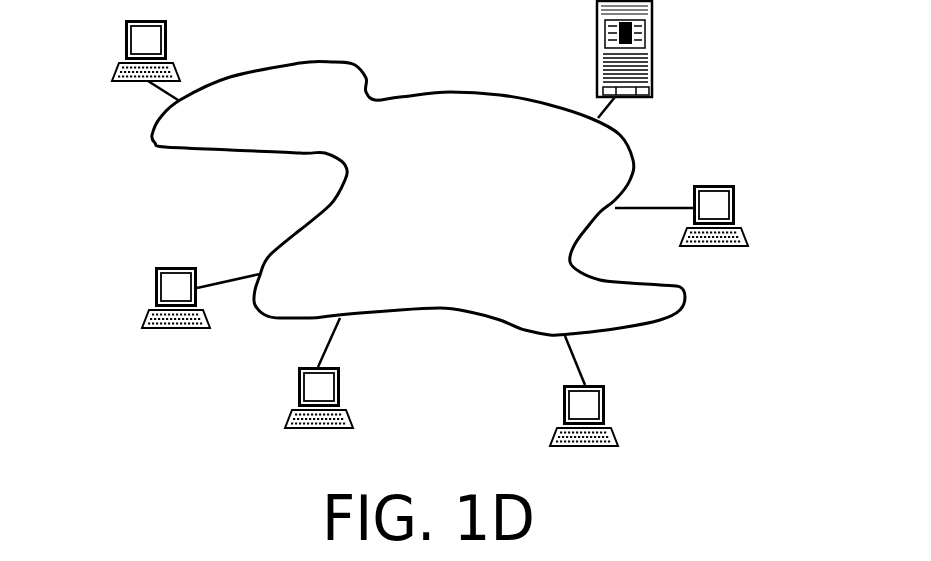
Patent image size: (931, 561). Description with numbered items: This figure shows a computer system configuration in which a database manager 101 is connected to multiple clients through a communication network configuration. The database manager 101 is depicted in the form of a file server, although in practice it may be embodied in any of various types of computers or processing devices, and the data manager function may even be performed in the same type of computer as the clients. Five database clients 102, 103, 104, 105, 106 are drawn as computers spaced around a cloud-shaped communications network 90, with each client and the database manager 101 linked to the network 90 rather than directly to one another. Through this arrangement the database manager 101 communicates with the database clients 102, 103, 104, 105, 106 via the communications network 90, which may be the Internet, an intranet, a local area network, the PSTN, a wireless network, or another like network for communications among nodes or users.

The communications network 90 is at (483, 220).
The database manager 101 is at (597, 36).
The client 102 is at (735, 193).
The client 103 is at (563, 395).
The client 104 is at (298, 378).
The client 105 is at (155, 275).
The client 106 is at (126, 30).